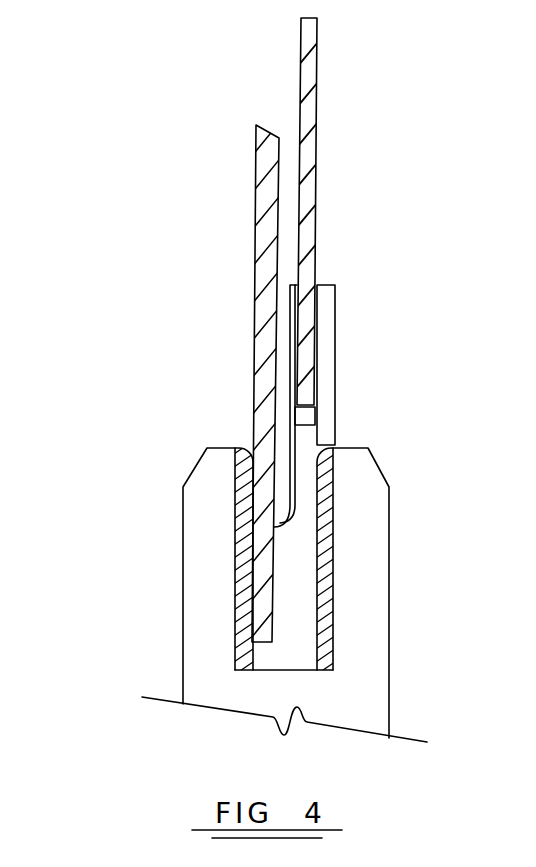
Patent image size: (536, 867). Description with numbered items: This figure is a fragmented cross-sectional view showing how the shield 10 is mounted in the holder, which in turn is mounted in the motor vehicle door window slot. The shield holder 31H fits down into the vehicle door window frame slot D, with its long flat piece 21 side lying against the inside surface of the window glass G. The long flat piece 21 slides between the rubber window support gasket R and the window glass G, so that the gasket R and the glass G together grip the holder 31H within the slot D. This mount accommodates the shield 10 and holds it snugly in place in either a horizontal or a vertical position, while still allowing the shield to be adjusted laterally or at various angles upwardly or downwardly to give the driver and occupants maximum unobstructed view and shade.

The strip / blade 10 is at (322, 24).
The window glass G is at (255, 126).
The long flat piece 21 is at (287, 320).
The shield holder 31H is at (337, 298).
The rubber window support gasket R is at (241, 449).
The vehicle door window frame slot D is at (301, 558).